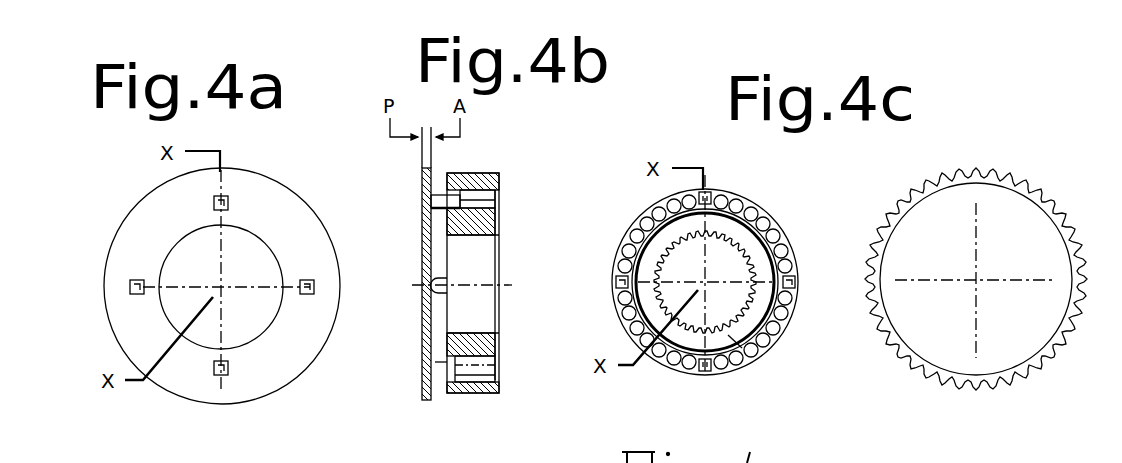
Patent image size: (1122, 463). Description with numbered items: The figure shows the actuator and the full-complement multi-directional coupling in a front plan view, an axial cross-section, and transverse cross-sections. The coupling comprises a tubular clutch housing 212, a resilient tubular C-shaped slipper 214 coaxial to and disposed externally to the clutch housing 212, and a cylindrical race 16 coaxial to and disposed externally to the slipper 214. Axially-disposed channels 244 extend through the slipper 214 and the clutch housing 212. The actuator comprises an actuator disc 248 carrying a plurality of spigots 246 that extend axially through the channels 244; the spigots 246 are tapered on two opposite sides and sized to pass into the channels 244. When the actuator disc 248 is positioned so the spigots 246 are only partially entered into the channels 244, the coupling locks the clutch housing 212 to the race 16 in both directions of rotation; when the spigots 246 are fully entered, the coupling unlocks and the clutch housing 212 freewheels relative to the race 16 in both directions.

In FIG. 4b, the cylindrical race 16 is at (499, 182).
In FIG. 4c, the cylindrical race 16 is at (982, 178).
In FIG. 4b, the tubular clutch housing 212 is at (497, 232).
In FIG. 4c, the tubular clutch housing 212 is at (755, 362).
In FIG. 4b, the resilient tubular C-shaped slipper 214 is at (502, 387).
In FIG. 4c, the resilient tubular C-shaped slipper 214 is at (790, 330).
In FIG. 4c, the axially-disposed channels 244 is at (712, 197).
In FIG. 4a, the spigots 246 is at (138, 283).
In FIG. 4b, the spigots 246 is at (443, 197).
In FIG. 4a, the actuator disc 248 is at (278, 362).
In FIG. 4b, the actuator disc 248 is at (428, 358).